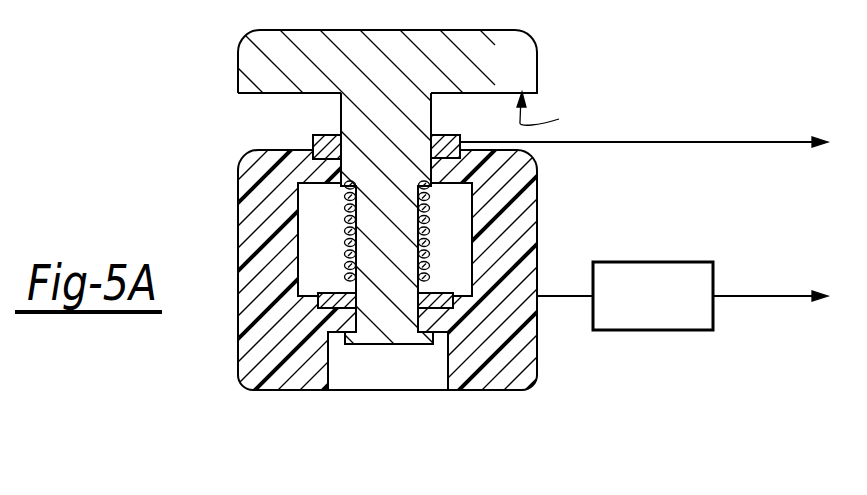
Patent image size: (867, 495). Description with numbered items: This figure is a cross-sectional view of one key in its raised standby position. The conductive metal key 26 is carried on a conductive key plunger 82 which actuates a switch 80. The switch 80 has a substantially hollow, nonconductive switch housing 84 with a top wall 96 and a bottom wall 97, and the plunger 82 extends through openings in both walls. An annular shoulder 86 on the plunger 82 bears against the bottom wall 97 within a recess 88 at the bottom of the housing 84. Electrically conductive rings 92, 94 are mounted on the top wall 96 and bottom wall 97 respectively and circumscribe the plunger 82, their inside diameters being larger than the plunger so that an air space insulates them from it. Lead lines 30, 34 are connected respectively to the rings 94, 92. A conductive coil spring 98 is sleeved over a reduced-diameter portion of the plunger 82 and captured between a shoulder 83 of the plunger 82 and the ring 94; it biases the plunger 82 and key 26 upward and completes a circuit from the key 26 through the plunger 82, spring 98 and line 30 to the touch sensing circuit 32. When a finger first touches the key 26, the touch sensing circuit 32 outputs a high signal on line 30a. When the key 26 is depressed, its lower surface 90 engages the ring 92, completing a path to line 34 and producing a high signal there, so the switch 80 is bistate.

The key 26 is at (512, 52).
The electrical lead line 30 is at (560, 294).
The output line of touch sensing circuit 30a is at (787, 243).
The touch sensing circuit 32 is at (652, 332).
The electrical lead line 34 is at (767, 100).
The switch 80 is at (433, 247).
The key plunger 82 is at (404, 128).
The shoulder of plunger 83 is at (440, 178).
The switch housing 84 is at (527, 380).
The annular shoulder 86 is at (427, 343).
The recess 88 is at (355, 382).
The lower surface of key pad 90 is at (552, 114).
The conductive ring 92 is at (323, 142).
The conductive ring 94 is at (318, 298).
The top wall 96 is at (323, 184).
The bottom wall 97 is at (438, 318).
The coil spring 98 is at (345, 220).